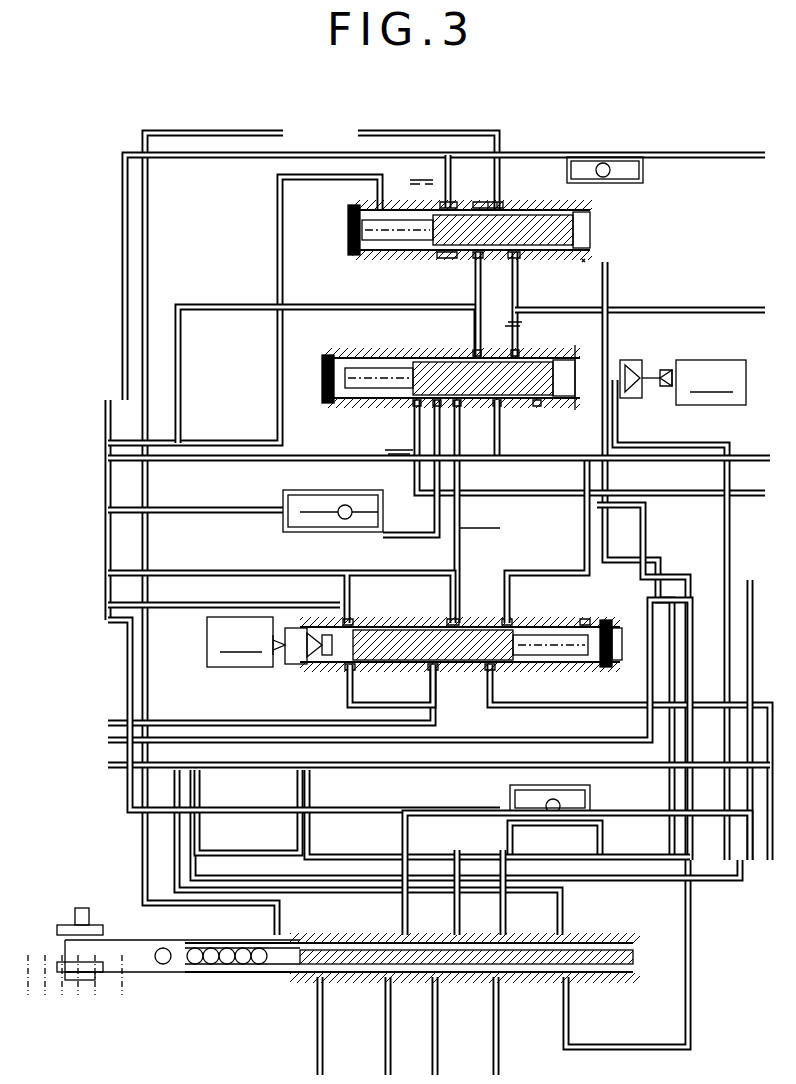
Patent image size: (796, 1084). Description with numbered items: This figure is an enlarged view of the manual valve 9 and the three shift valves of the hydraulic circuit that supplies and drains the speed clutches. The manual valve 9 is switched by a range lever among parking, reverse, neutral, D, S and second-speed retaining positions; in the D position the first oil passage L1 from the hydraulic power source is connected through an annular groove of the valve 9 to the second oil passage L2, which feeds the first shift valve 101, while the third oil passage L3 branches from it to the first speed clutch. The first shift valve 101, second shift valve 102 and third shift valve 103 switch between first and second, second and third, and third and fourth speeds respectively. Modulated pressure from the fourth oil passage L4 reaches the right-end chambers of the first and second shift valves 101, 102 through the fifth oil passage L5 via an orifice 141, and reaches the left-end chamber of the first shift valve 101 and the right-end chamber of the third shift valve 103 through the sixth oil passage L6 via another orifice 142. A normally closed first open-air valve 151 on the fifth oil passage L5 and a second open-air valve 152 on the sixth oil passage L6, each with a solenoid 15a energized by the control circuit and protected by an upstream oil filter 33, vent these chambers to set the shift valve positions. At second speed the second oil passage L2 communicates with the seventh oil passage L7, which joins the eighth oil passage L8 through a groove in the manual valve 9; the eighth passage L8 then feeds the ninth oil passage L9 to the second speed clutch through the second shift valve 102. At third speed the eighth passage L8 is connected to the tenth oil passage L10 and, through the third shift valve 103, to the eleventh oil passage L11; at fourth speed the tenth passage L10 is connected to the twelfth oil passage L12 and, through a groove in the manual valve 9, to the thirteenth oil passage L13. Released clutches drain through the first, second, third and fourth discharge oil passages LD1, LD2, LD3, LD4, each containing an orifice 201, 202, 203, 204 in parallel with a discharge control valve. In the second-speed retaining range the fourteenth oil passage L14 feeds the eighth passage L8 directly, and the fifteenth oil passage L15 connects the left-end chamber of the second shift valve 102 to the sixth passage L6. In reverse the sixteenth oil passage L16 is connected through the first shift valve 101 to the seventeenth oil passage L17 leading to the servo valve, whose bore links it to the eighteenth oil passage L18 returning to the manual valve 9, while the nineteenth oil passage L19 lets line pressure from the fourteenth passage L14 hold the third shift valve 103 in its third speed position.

The manual valve 9 is at (138, 945).
The first shift valve 101 is at (595, 625).
The second shift valve 102 is at (525, 355).
The third shift valve 103 is at (505, 208).
The solenoid 15a is at (476, 513).
The oil filter 33 is at (632, 365).
The orifice 201 is at (410, 480).
The orifice 202 is at (427, 175).
The orifice 203 is at (517, 318).
The orifice 204 is at (480, 500).
The orifice 141 is at (700, 445).
The orifice 142 is at (425, 708).
The first open-air valve 151 is at (668, 388).
The second open-air valve 152 is at (280, 655).
The No. 1 oil passage L1 is at (388, 1040).
The No. 2 oil passage L2 is at (418, 740).
The No. 3 oil passage L3 is at (598, 808).
The No. 4 oil passage L4 is at (560, 708).
The No. 5 oil passage L5 is at (638, 445).
The No. 6 oil passage L6 is at (612, 300).
The No. 7 oil passage L7 is at (672, 735).
The No. 8 oil passage L8 is at (457, 475).
The No. 9 oil passage L9 is at (198, 510).
The No. 10 oil passage L10 is at (478, 300).
The No. 11 oil passage L11 is at (668, 153).
The No. 12 oil passage L12 is at (500, 145).
The No. 13 oil passage L13 is at (300, 793).
The No. 14 oil passage L14 is at (496, 1040).
The No. 15 oil passage L15 is at (218, 305).
The No. 16 oil passage L16 is at (205, 740).
The No. 17 oil passage L17 is at (450, 605).
The No. 18 oil passage L18 is at (338, 915).
The No. 19 oil passage L19 is at (280, 195).
The No. 1 discharge oil passage LD1 is at (712, 532).
The No. 2 discharge oil passage LD2 is at (127, 250).
The No. 3 discharge oil passage LD3 is at (670, 308).
The No. 4 discharge oil passage LD4 is at (500, 497).